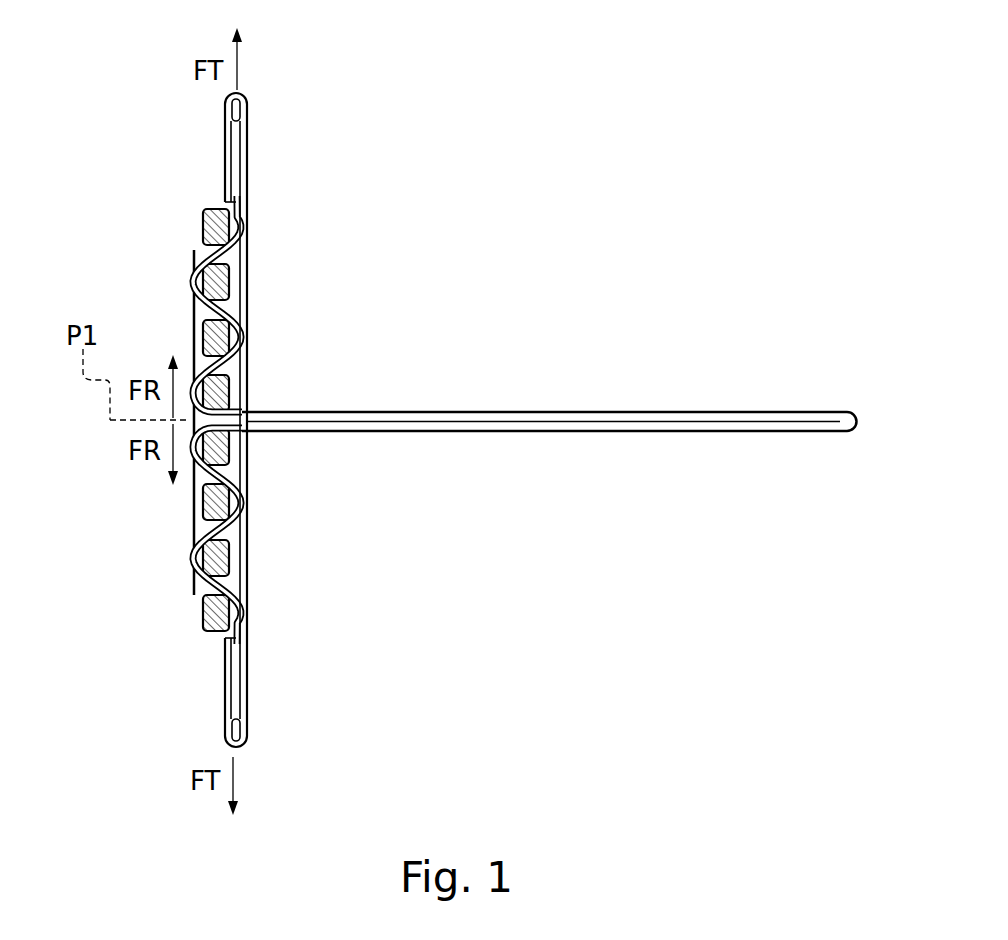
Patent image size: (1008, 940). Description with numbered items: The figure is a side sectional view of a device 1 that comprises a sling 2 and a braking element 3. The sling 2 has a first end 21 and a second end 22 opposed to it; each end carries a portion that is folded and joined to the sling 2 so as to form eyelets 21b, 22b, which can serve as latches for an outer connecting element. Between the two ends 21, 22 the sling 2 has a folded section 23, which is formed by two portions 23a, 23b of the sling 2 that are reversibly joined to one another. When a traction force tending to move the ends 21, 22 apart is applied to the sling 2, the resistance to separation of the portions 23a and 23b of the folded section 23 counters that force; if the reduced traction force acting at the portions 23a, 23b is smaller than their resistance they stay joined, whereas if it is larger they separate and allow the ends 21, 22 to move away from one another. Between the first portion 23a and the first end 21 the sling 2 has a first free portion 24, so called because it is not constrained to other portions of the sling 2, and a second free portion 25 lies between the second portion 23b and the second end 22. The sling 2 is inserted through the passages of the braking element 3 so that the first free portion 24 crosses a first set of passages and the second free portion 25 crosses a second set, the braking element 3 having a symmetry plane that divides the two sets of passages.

The device 1 is at (614, 116).
The sling 2 is at (808, 411).
The braking element 3 is at (200, 600).
The first end 21 is at (247, 165).
The eyelet 21b is at (238, 100).
The second end 22 is at (238, 680).
The eyelet 22b is at (238, 746).
The folded section 23 is at (692, 378).
The first portion of the folded section 23a is at (505, 412).
The second portion of the folded section 23b is at (505, 432).
The first free portion 24 is at (240, 340).
The second free portion 25 is at (242, 506).